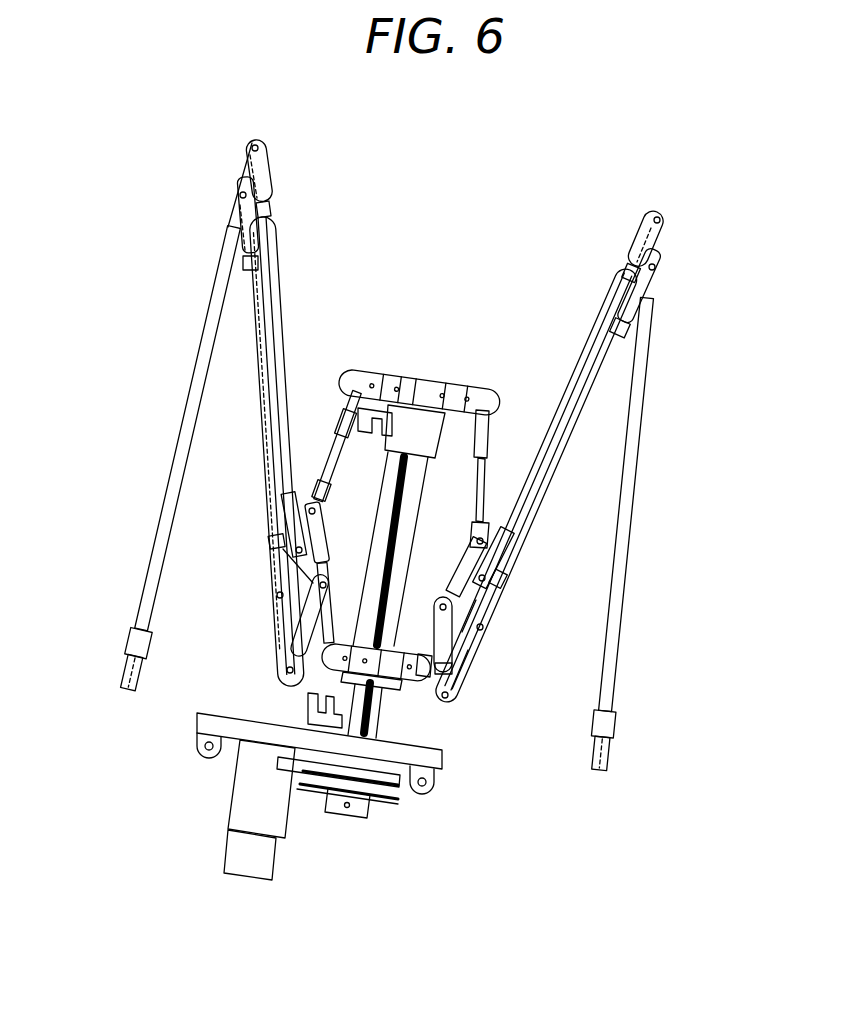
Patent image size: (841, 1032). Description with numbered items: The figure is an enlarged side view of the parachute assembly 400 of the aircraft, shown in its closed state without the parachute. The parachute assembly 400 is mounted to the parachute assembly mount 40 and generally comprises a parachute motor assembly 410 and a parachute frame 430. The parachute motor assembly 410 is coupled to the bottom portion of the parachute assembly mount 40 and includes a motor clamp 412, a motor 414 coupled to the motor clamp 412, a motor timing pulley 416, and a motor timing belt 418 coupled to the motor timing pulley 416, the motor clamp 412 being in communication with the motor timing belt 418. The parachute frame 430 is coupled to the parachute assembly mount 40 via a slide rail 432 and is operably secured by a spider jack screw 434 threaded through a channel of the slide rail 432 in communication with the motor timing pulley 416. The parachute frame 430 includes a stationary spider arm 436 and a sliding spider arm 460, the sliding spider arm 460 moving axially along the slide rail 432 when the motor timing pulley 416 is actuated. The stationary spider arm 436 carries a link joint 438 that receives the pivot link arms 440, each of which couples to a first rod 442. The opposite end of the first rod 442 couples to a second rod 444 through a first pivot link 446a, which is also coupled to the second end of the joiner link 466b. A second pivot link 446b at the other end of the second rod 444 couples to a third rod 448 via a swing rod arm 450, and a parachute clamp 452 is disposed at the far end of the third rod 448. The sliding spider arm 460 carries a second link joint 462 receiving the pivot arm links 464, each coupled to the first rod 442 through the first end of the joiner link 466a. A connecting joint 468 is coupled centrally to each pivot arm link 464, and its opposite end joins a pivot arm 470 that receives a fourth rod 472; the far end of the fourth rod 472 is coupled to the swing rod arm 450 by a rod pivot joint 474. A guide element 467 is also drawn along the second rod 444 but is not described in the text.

The parachute assembly 400 is at (438, 520).
The parachute motor assembly 410 is at (282, 825).
The motor clamp 412 is at (243, 790).
The motor 414 is at (236, 862).
The motor timing pulley 416 is at (360, 808).
The motor timing belt 418 is at (400, 797).
The parachute assembly mount 40 is at (150, 746).
The parachute frame 430 is at (559, 488).
The slide rail 432 is at (378, 710).
The spider jack screw 434 is at (400, 536).
The stationary spider arm 436 is at (471, 393).
The link joint 438 is at (430, 387).
The pivot link arm 440 is at (399, 375).
The first rod 442 is at (330, 462).
The second rod 444 is at (509, 473).
The first pivot link 446a is at (503, 549).
The second pivot link 446b is at (652, 228).
The third rod 448 is at (612, 648).
The swing rod arm 450 is at (663, 237).
The parachute clamp 452 is at (131, 638).
The sliding spider arm 460 is at (393, 681).
The second link joint 462 is at (330, 666).
The pivot arm link 464 is at (318, 521).
The joiner link first end 466a is at (299, 497).
The joiner link second end 466b is at (270, 543).
The guide 467 is at (487, 624).
The connecting joint 468 is at (298, 636).
The pivot arm 470 is at (478, 656).
The fourth rod 472 is at (558, 468).
The rod pivot joint 474 is at (652, 288).